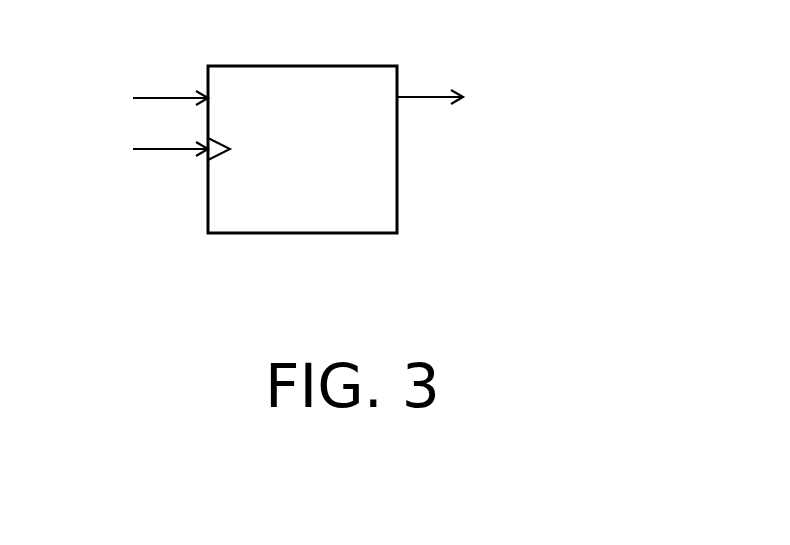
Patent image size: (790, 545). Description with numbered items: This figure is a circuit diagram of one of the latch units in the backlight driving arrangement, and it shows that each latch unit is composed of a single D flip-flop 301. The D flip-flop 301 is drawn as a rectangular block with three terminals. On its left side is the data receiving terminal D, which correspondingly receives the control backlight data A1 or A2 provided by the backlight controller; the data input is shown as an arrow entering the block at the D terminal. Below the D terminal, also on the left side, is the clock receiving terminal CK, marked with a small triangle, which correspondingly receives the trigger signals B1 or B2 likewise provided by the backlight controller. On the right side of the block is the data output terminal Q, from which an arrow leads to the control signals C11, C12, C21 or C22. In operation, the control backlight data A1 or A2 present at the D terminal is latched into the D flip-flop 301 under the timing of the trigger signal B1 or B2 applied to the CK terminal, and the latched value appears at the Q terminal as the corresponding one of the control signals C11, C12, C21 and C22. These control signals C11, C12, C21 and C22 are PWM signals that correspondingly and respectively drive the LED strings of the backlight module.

The D flip-flop 301 is at (303, 66).
The control backlight data A1 is at (128, 97).
The control backlight data A2 is at (128, 97).
The trigger signal B1 is at (128, 149).
The trigger signal B2 is at (128, 149).
The control signal C11 is at (555, 99).
The control signal C12 is at (555, 99).
The control signal C21 is at (555, 99).
The control signal C22 is at (555, 99).